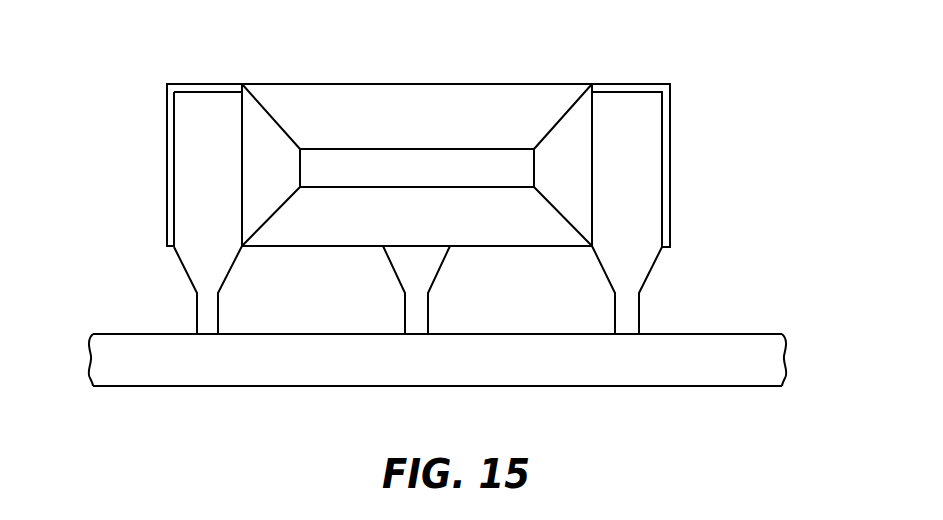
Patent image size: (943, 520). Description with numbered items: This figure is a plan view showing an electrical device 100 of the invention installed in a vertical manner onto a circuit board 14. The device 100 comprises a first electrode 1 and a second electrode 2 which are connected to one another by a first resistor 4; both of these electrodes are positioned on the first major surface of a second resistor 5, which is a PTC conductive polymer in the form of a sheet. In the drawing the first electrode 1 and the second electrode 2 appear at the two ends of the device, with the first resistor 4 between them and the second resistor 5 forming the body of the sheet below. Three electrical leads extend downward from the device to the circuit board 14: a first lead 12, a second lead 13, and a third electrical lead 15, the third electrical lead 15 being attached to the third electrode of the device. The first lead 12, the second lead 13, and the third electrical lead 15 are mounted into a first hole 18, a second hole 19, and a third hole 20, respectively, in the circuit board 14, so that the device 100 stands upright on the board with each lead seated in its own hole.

The electrical device 100 is at (706, 62).
The first electrode 1 is at (277, 183).
The second electrode 2 is at (571, 180).
The first resistor 4 is at (421, 180).
The second resistor 5 is at (489, 236).
The first lead 12 is at (197, 253).
The second lead 13 is at (642, 255).
The third electrical lead 15 is at (422, 262).
The circuit board 14 is at (710, 380).
The first hole 18 is at (219, 333).
The second hole 19 is at (640, 333).
The third hole 20 is at (430, 333).